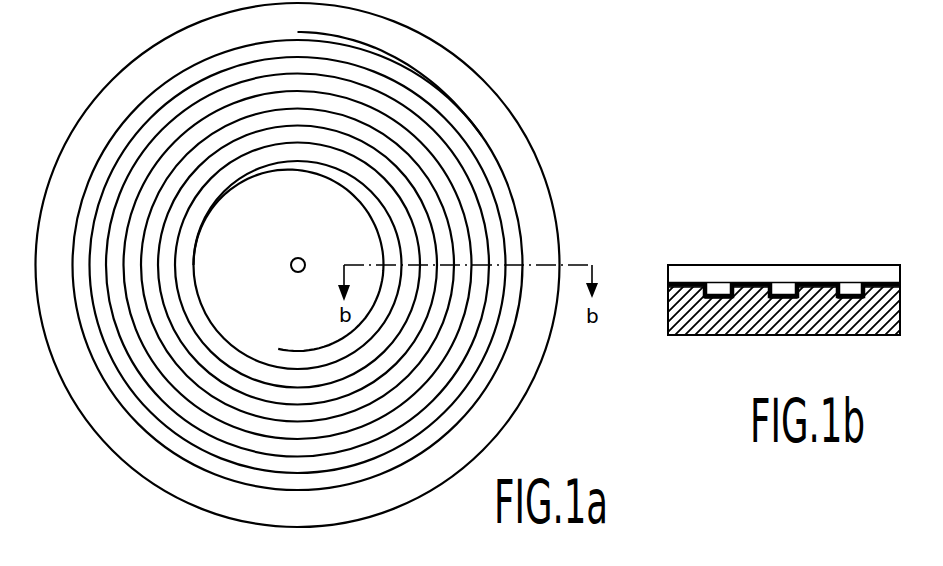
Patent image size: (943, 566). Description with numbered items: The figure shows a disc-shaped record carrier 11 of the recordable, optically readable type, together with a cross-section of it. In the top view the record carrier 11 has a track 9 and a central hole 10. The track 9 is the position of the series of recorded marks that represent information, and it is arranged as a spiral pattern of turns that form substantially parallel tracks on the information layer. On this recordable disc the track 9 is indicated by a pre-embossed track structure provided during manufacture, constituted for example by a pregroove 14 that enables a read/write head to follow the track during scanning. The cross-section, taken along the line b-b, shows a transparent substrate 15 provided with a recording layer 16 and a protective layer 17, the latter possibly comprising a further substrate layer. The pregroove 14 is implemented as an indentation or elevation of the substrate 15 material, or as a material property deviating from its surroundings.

In FIG. 1A, the track 9 is at (157, 95).
In FIG. 1A, the central hole 10 is at (296, 258).
In FIG. 1A, the record carrier 11 is at (538, 95).
In FIG. 1B, the record carrier 11 is at (673, 233).
In FIG. 1B, the pregroove 14 is at (791, 295).
In FIG. 1B, the transparent substrate 15 is at (685, 335).
In FIG. 1B, the recording layer 16 is at (871, 282).
In FIG. 1B, the protective layer 17 is at (780, 274).